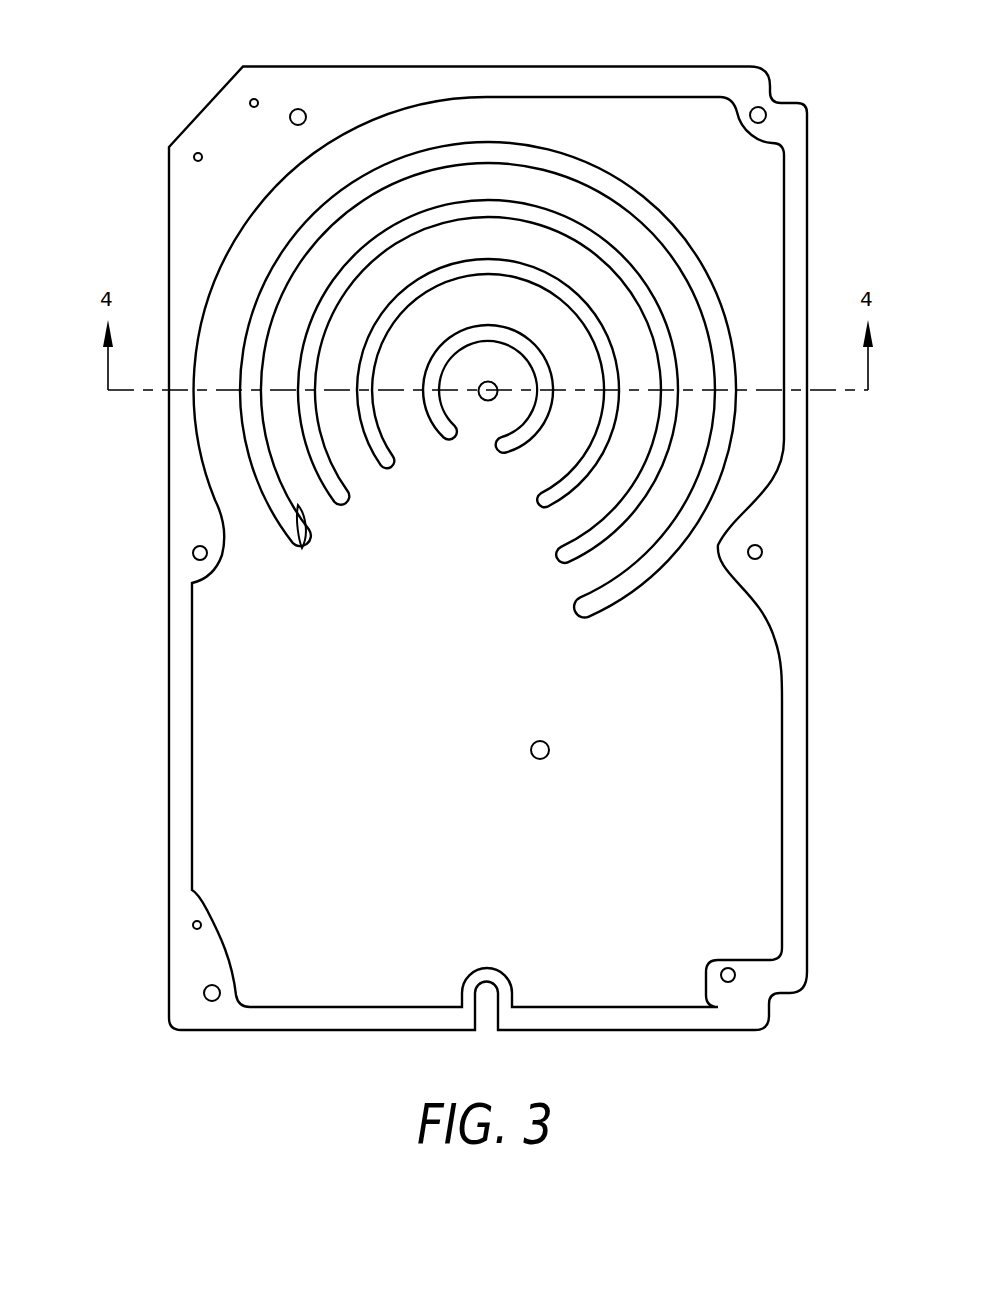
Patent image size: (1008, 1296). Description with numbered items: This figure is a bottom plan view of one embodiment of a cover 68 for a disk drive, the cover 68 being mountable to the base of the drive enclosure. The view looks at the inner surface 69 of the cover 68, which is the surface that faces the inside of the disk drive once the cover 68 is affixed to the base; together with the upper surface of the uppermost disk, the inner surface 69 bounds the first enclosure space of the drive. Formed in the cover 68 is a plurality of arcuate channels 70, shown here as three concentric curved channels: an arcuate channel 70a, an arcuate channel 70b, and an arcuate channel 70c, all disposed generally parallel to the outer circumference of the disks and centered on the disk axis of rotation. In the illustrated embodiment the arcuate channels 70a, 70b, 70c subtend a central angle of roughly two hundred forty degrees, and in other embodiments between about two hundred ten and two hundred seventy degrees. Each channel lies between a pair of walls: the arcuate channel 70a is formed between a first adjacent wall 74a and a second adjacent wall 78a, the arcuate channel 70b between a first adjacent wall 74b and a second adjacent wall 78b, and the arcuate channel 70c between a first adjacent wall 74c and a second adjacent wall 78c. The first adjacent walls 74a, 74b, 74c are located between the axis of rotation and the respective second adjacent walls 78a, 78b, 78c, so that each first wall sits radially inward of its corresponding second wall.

The cover 68 is at (158, 735).
The inner surface 69 is at (737, 472).
The arcuate channels 70 is at (568, 314).
The arcuate channel 70a is at (690, 317).
The arcuate channel 70b is at (608, 285).
The arcuate channel 70c is at (510, 298).
The first adjacent wall 74a is at (329, 503).
The first adjacent wall 74b is at (377, 477).
The first adjacent wall 74c is at (479, 397).
The second adjacent wall 78a is at (300, 547).
The second adjacent wall 78b is at (314, 367).
The second adjacent wall 78c is at (380, 347).